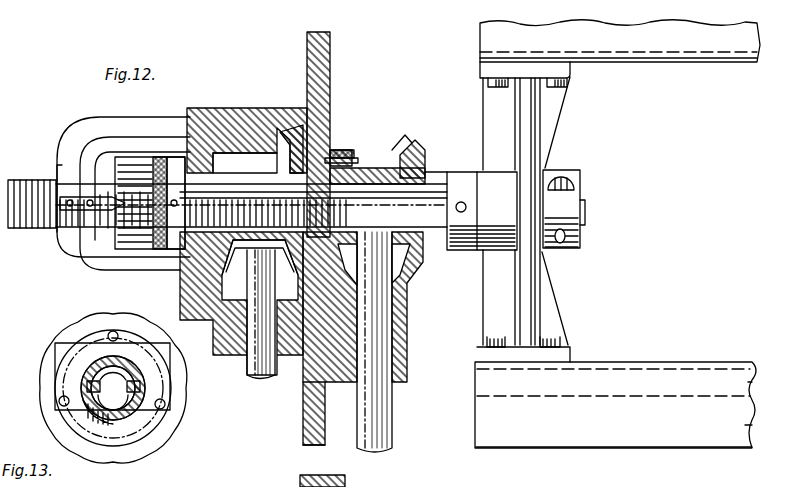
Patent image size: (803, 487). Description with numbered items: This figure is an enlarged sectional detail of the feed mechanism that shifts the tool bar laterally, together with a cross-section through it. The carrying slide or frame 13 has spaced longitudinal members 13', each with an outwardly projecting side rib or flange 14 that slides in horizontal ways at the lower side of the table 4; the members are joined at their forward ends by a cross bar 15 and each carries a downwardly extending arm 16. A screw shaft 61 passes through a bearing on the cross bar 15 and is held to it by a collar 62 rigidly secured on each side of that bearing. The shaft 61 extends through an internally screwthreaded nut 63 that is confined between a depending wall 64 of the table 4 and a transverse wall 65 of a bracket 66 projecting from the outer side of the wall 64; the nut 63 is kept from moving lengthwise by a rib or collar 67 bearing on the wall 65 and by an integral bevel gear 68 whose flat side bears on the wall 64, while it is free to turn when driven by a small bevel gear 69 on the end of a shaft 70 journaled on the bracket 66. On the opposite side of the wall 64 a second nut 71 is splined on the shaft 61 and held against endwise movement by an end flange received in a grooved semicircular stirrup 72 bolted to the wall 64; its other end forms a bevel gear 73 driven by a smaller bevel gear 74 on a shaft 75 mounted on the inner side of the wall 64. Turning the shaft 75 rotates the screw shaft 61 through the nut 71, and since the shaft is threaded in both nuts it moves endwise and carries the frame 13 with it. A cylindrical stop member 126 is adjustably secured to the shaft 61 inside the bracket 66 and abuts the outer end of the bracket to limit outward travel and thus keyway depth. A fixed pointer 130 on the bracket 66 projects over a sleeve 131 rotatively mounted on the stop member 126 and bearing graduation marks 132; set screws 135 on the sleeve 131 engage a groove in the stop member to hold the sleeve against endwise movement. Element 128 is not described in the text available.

In FIG. 12, the table 4 is at (302, 423).
In FIG. 12, the carrying slide or frame 13 is at (497, 270).
In FIG. 12, the longitudinal members 13' is at (768, 382).
In FIG. 12, the side rib or flange 14 is at (748, 428).
In FIG. 12, the cross bar 15 is at (552, 126).
In FIG. 13, the cross bar 15 is at (212, 477).
In FIG. 13, the downwardly extending arm 16 is at (265, 486).
In FIG. 12, the screw shaft 61 is at (24, 182).
In FIG. 13, the screw shaft 61 is at (165, 416).
In FIG. 12, the collar 62 is at (462, 246).
In FIG. 12, the internally screwthreaded nut 63 is at (250, 160).
In FIG. 12, the depending wall 64 is at (320, 70).
In FIG. 13, the depending wall 64 is at (180, 386).
In FIG. 12, the transverse wall 65 is at (204, 130).
In FIG. 13, the transverse wall 65 is at (352, 480).
In FIG. 12, the bracket 66 is at (88, 126).
In FIG. 12, the rib or collar 67 is at (188, 298).
In FIG. 12, the bevel gear 68 is at (288, 128).
In FIG. 12, the small bevel gear 69 is at (218, 306).
In FIG. 12, the shaft 70 is at (248, 362).
In FIG. 12, the second nut 71 is at (372, 172).
In FIG. 13, the second nut 71 is at (85, 372).
In FIG. 12, the grooved semicircular collar or stirrup 72 is at (352, 150).
In FIG. 13, the grooved semicircular collar or stirrup 72 is at (75, 352).
In FIG. 12, the bevel gear 73 is at (410, 150).
In FIG. 12, the smaller bevel gear 74 is at (398, 282).
In FIG. 12, the shaft 75 is at (392, 422).
In FIG. 12, the cylindrical stop member 126 is at (170, 158).
In FIG. 13, the part 128 is at (254, 477).
In FIG. 12, the fixed pointer 130 is at (95, 210).
In FIG. 12, the sleeve 131 is at (135, 250).
In FIG. 12, the graduation marks 132 is at (105, 218).
In FIG. 12, the set screws 135 is at (614, 467).